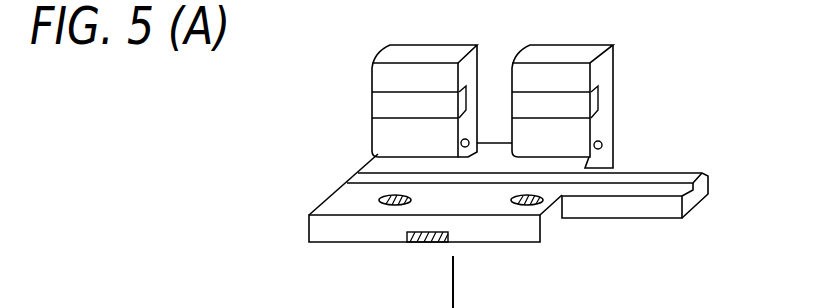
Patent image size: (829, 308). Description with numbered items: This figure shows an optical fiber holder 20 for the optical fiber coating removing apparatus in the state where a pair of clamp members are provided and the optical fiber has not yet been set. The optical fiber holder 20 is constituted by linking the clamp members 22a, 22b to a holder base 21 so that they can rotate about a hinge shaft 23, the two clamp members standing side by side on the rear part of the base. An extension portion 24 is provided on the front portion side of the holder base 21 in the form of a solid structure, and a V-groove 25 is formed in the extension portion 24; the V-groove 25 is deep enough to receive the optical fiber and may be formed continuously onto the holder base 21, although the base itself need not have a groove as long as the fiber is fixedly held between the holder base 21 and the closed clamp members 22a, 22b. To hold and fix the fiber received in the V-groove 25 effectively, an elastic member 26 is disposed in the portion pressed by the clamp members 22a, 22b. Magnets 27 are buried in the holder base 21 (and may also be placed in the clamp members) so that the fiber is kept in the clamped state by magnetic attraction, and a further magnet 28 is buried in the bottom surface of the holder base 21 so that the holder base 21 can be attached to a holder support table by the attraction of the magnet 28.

The optical fiber holder 20 is at (708, 100).
The holder base 21 is at (340, 232).
The clamp member 22a is at (380, 80).
The clamp member 22b is at (585, 78).
The hinge shaft 23 is at (606, 143).
The extension portion 24 is at (662, 214).
The V-groove 25 is at (677, 181).
The elastic member 26 is at (377, 110).
The magnet 27 is at (380, 198).
The magnet 28 is at (422, 244).